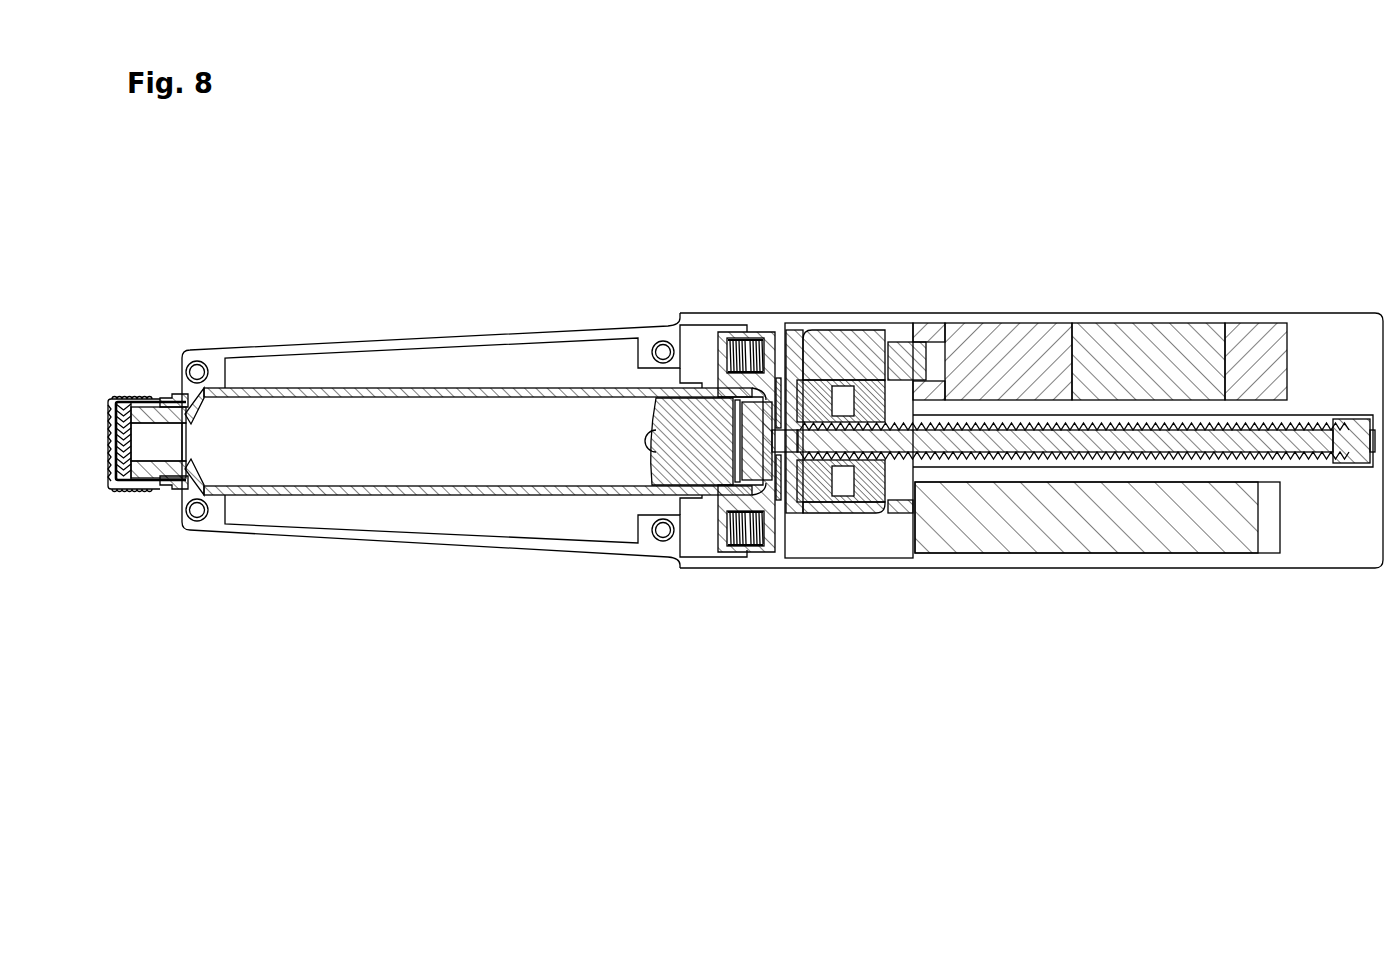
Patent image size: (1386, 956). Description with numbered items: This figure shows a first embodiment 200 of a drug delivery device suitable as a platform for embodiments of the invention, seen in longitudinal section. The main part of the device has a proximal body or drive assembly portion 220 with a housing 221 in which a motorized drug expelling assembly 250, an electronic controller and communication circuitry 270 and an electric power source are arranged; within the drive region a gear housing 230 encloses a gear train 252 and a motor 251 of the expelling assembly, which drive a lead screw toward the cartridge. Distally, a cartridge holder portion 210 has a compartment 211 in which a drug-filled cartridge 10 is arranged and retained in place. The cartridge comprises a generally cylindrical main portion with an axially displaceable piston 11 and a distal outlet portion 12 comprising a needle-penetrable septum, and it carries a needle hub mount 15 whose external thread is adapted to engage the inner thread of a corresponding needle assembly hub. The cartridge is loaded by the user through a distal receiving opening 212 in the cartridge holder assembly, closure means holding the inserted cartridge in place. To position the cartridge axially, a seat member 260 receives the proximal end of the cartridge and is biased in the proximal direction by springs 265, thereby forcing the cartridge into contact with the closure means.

The first embodiment of a drug delivery device 200 is at (556, 237).
The drug-filled cartridge 10 is at (362, 453).
The piston 11 is at (660, 458).
The distal outlet portion 12 is at (125, 405).
The needle hub mount 15 is at (142, 397).
The distal cartridge holder portion 210 is at (440, 550).
The compartment 211 is at (438, 358).
The distal receiving opening 212 is at (178, 492).
The proximal body or drive assembly portion 220 is at (952, 581).
The housing 221 is at (1080, 568).
The gear housing 230 is at (850, 532).
The motorized drug expelling assembly 250 is at (922, 277).
The motor 251 is at (1040, 323).
The gear train 252 is at (817, 333).
The seat member 260 is at (723, 535).
The springs 265 is at (748, 530).
The electronic controller and communication circuitry 270 is at (1143, 552).